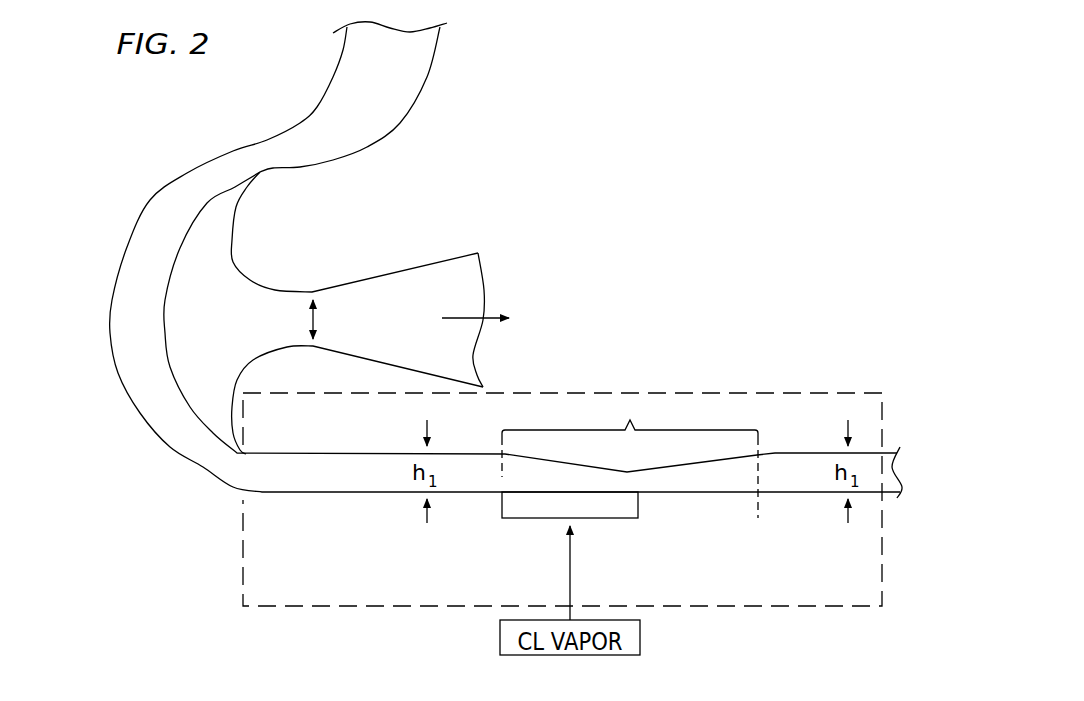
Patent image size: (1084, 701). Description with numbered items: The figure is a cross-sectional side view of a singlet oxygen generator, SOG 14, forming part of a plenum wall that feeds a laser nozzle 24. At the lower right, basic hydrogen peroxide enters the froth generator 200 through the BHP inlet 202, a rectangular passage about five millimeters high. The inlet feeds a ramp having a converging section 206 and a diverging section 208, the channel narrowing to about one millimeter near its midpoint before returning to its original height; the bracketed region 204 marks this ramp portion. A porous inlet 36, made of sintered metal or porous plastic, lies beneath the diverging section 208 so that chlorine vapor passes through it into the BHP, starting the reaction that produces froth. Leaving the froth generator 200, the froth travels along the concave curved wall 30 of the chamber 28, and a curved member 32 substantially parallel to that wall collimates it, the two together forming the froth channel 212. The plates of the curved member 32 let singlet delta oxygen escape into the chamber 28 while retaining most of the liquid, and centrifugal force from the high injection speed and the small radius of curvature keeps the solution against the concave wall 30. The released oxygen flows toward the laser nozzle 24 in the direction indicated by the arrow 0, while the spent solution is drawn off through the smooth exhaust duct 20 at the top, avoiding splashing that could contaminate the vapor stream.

The SOG 14 is at (148, 449).
The exhaust duct 20 is at (400, 72).
The froth channel 212 is at (160, 193).
The curved member 32 is at (208, 203).
The concave curved wall 30 is at (125, 250).
The chamber 28 is at (122, 323).
The laser nozzle 24 is at (313, 320).
The flow direction 0 is at (492, 318).
The froth generator 200 is at (322, 571).
The froth region 204 is at (630, 457).
The diverging section 208 is at (537, 468).
The converging section 206 is at (720, 465).
The BHP inlet 202 is at (782, 453).
The porous inlet 36 is at (613, 513).